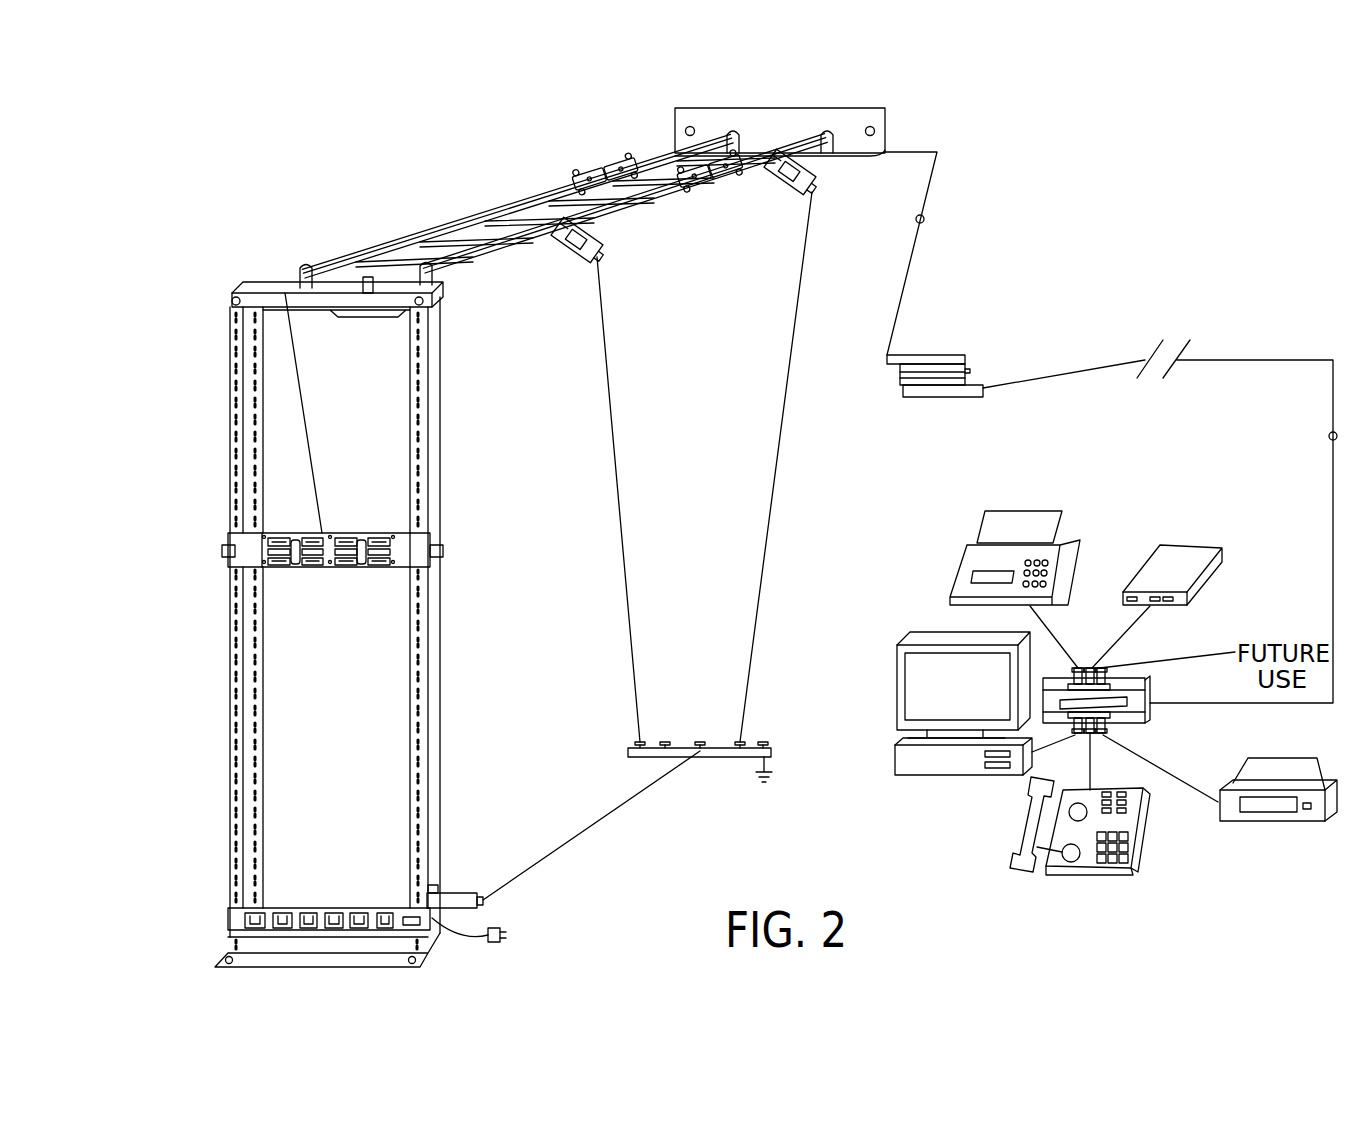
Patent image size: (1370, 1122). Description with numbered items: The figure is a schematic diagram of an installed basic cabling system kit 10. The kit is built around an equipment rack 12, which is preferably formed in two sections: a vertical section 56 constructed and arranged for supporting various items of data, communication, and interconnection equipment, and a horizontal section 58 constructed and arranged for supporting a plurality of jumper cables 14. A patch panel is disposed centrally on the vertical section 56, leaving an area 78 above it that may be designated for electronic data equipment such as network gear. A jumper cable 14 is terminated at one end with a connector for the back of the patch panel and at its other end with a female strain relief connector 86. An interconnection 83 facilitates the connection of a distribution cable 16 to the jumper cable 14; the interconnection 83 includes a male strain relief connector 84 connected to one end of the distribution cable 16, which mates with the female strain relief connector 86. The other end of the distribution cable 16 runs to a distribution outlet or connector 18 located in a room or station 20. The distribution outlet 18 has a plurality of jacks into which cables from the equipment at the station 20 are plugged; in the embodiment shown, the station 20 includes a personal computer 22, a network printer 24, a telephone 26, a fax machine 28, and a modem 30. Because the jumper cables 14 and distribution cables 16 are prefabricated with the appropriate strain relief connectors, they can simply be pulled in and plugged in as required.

The basic cabling system kit 10 is at (1132, 245).
The equipment rack 12 is at (302, 236).
The jumper cable 14 is at (924, 222).
The distribution cable 16 is at (1328, 436).
The distribution outlet 18 is at (1128, 704).
The station 20 is at (936, 689).
The personal computer 22 is at (897, 771).
The network printer 24 is at (1337, 785).
The telephone 26 is at (1137, 860).
The fax machine 28 is at (1079, 540).
The modem 30 is at (1197, 558).
The vertical section 56 is at (440, 606).
The horizontal section 58 is at (540, 197).
The area above the patch panel 78 is at (1125, 703).
The interconnection 83 is at (990, 381).
The male strain relief connector 84 is at (925, 398).
The female strain relief connector 86 is at (928, 356).